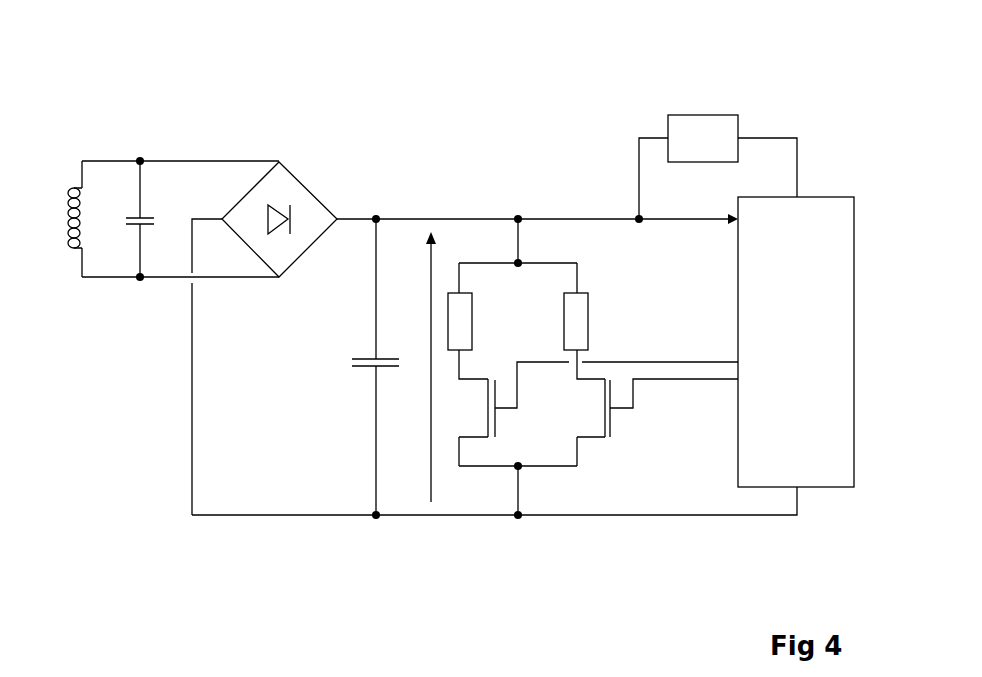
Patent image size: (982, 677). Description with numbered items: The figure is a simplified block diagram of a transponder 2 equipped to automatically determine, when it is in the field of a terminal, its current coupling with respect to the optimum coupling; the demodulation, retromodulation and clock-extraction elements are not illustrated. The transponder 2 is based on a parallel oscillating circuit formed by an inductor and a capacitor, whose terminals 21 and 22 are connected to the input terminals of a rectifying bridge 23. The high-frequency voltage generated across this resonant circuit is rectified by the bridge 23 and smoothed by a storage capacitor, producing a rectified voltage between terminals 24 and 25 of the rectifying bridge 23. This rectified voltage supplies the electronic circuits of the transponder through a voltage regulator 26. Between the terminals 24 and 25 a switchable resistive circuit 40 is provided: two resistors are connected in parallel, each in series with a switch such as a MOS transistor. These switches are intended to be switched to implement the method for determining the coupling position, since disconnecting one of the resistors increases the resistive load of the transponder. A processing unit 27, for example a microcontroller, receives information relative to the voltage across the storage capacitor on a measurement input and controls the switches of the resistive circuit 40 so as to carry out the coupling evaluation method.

The transponder 2 is at (457, 355).
The terminal 21 is at (140, 161).
The terminal 22 is at (140, 277).
The rectifying bridge 23 is at (313, 191).
The terminal 24 is at (376, 219).
The terminal 25 is at (376, 515).
The voltage regulator 26 is at (703, 115).
The processing unit 27 is at (830, 197).
The switchable resistive circuit 40 is at (507, 310).